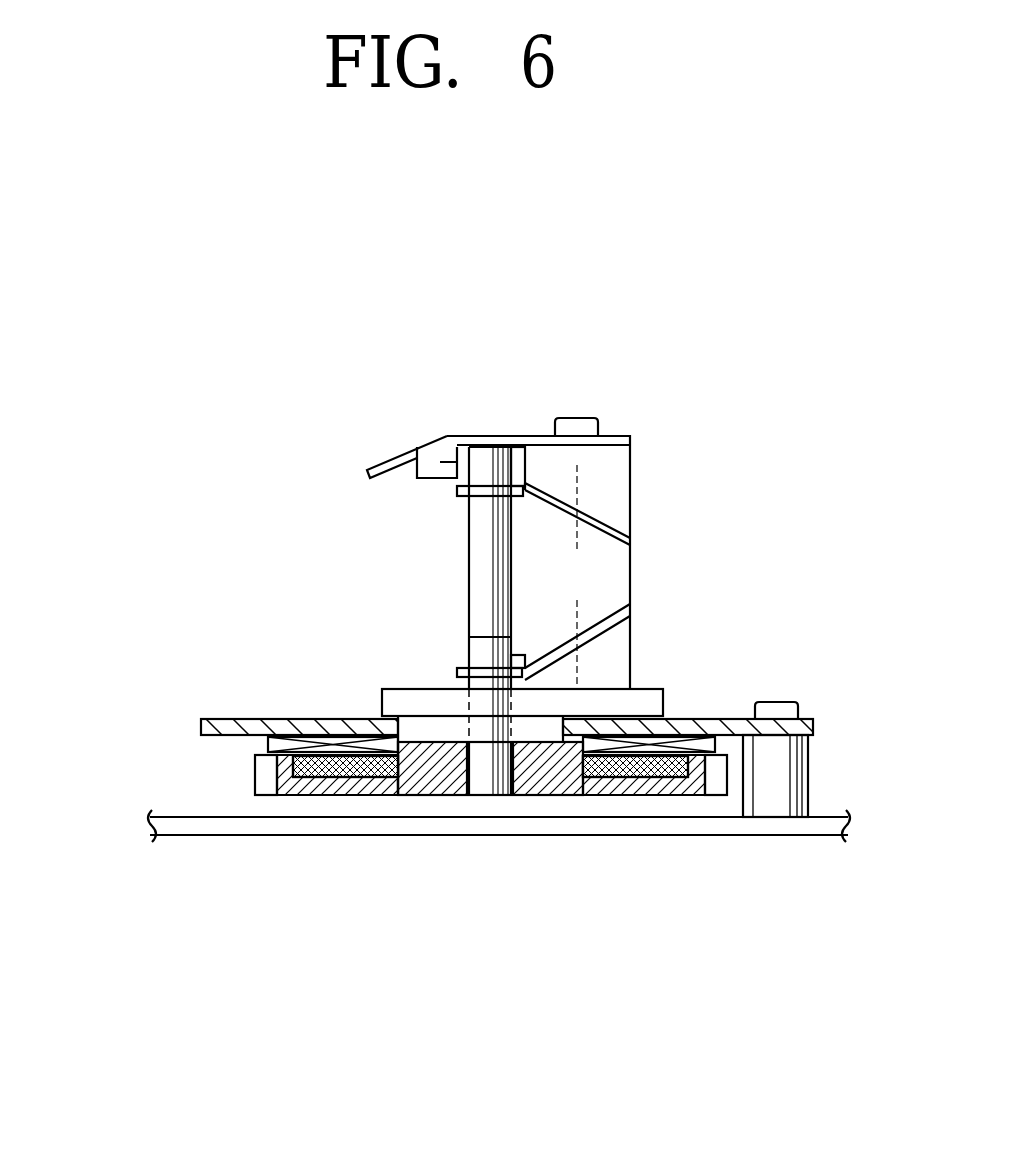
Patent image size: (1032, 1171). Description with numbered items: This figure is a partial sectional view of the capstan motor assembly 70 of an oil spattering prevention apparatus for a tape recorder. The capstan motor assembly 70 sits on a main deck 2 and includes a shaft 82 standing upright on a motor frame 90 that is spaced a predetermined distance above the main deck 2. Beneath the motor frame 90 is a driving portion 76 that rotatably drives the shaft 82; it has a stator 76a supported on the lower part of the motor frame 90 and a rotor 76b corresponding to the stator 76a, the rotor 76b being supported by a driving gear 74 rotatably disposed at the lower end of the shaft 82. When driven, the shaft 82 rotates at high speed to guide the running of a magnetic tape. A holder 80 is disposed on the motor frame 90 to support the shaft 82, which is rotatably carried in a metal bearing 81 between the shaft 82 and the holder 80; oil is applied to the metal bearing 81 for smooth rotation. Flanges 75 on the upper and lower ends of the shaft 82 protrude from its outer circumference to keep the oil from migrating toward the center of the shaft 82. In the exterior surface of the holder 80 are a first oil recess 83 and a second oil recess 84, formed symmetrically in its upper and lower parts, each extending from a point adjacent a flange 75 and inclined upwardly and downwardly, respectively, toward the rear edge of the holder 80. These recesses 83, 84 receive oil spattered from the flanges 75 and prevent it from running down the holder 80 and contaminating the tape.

The main deck 2 is at (287, 818).
The capstan motor assembly 70 is at (440, 569).
The driving gear 74 is at (443, 770).
The flanges 75 is at (458, 492).
The driving portion 76 is at (85, 738).
The stator 76a is at (268, 741).
The rotor 76b is at (290, 772).
The holder 80 is at (615, 465).
The metal bearing 81 is at (420, 448).
The shaft 82 is at (483, 655).
The first oil recess 83 is at (615, 530).
The second oil recess 84 is at (598, 630).
The motor frame 90 is at (813, 722).